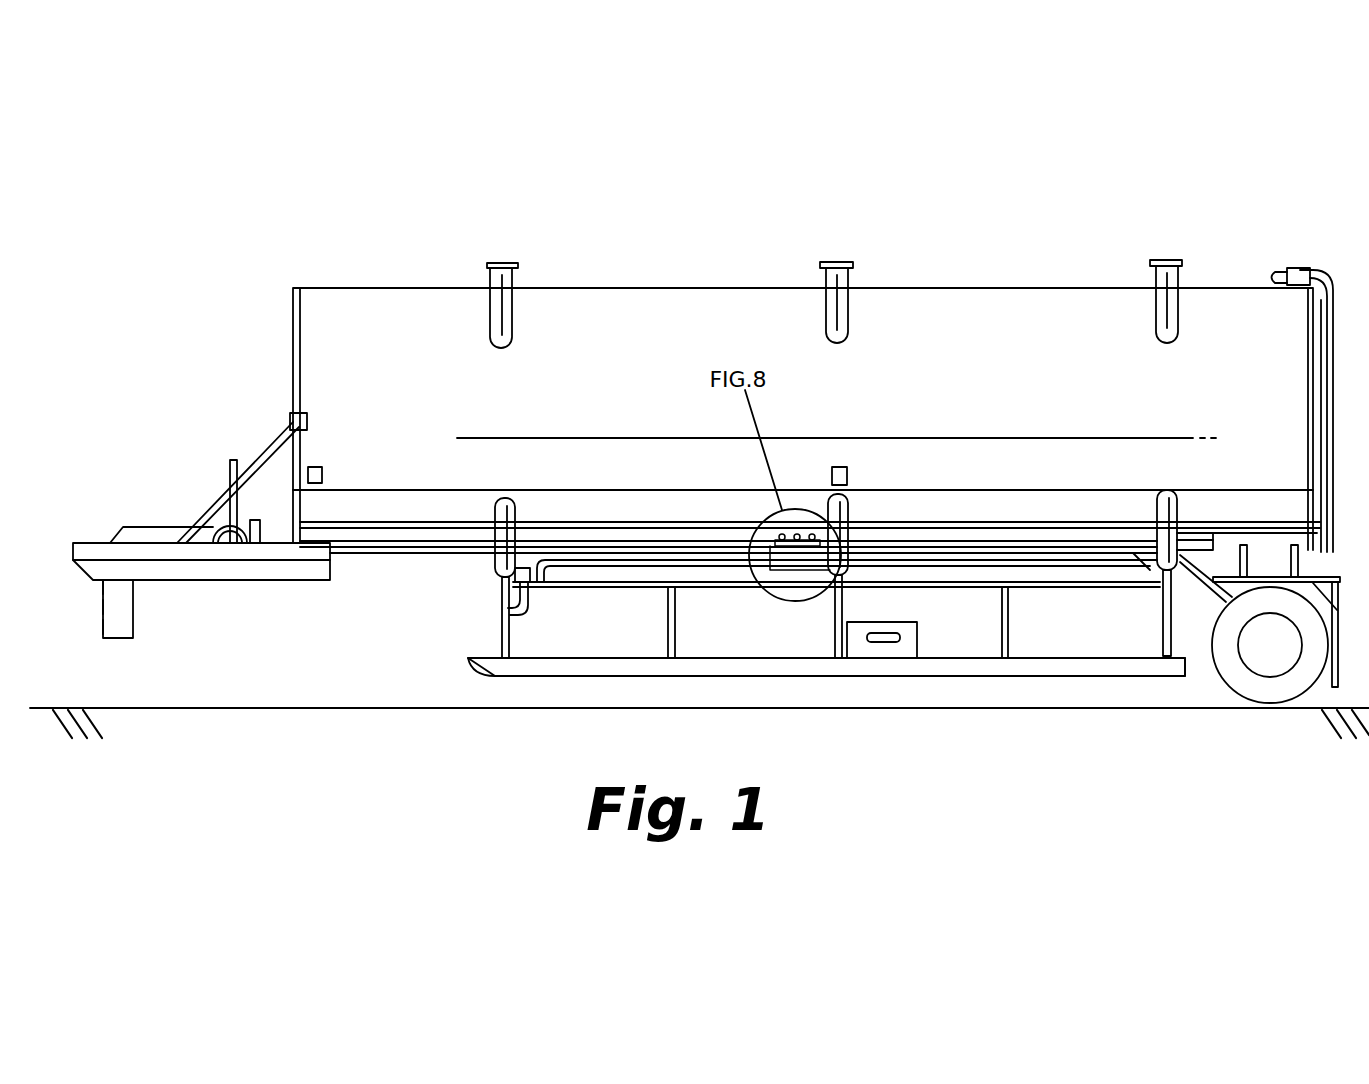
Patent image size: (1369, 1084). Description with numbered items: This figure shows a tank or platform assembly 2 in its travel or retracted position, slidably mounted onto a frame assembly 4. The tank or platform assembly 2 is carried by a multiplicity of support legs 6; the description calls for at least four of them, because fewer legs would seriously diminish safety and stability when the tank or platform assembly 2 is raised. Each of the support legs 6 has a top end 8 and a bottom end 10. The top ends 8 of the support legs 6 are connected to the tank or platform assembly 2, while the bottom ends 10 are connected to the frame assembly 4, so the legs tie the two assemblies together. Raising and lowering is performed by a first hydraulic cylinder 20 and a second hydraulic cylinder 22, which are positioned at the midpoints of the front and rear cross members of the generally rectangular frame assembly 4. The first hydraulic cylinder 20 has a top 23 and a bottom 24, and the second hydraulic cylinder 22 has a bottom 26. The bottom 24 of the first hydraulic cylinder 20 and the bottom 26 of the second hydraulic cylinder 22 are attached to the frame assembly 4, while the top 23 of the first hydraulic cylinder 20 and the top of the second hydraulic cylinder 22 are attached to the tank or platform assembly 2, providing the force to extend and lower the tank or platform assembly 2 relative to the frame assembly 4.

The tank or platform assembly 2 is at (643, 288).
The frame assembly 4 is at (838, 678).
The support legs 6 is at (495, 555).
The top ends 8 is at (506, 498).
The bottom ends 10 is at (513, 653).
The first hydraulic cylinder 20 is at (513, 283).
The second hydraulic cylinder 22 is at (1180, 280).
The top 23 is at (503, 262).
The bottom 24 is at (497, 657).
The bottom 26 is at (1187, 647).